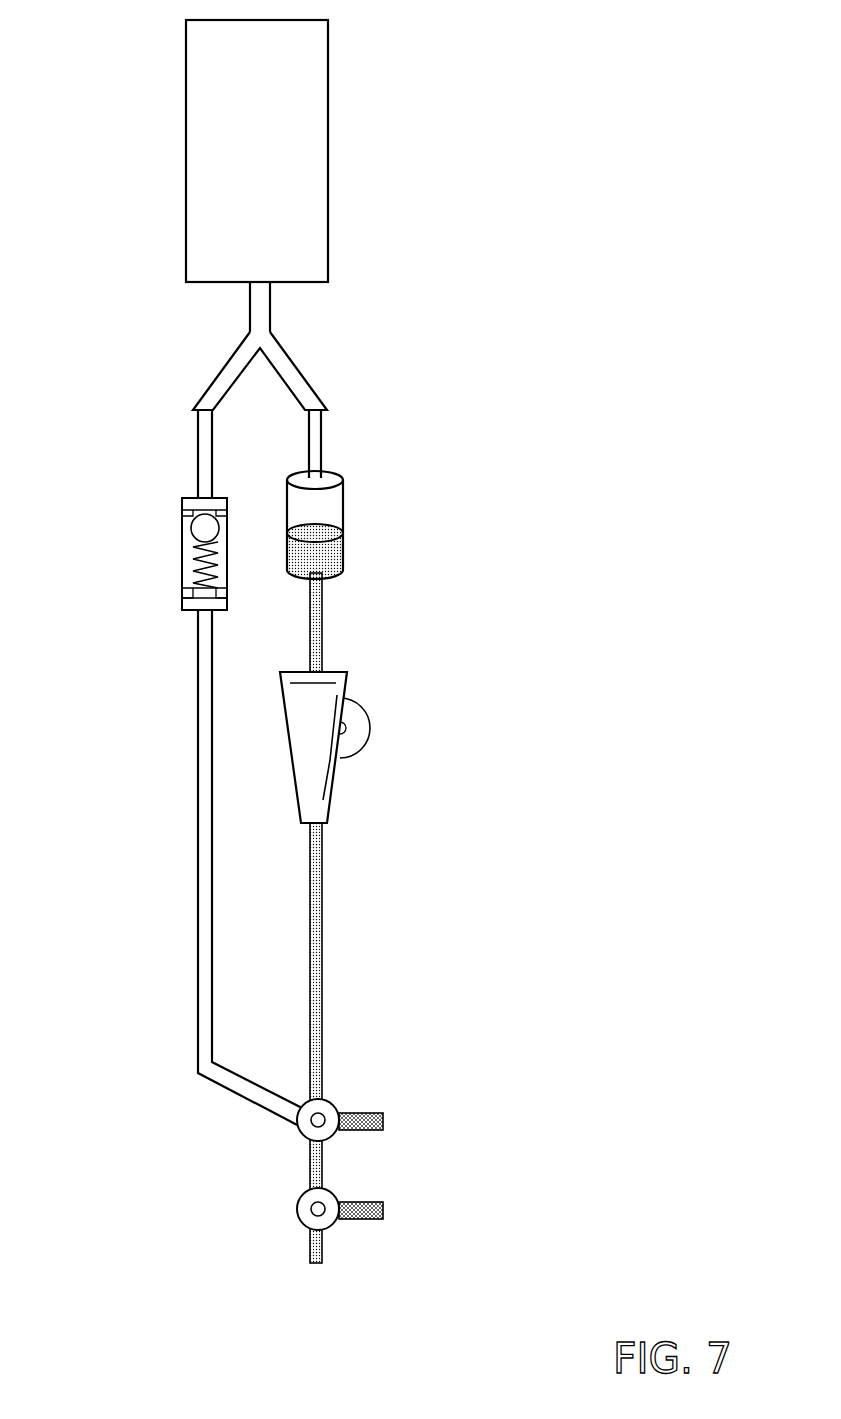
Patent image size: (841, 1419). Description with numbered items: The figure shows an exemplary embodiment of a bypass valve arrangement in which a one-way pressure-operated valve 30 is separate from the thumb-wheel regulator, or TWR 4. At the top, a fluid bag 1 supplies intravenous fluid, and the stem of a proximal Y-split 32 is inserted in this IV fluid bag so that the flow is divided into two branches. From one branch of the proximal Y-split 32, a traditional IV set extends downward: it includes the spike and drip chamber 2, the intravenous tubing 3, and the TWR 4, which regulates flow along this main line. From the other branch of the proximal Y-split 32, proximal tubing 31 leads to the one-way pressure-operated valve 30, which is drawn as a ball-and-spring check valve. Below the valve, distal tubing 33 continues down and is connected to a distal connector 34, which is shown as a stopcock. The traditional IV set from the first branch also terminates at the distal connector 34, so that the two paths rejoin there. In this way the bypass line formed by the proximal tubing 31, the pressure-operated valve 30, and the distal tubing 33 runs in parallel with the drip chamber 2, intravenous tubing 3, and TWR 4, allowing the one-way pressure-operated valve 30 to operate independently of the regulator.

The fluid bag 1 is at (376, 208).
The drip chamber 2 is at (390, 527).
The intravenous tubing 3 is at (362, 642).
The TWR 4 is at (407, 773).
The one-way pressure-operated valve 30 is at (145, 485).
The proximal tubing 31 is at (198, 442).
The proximal Y-split 32 is at (318, 367).
The distal tubing 33 is at (198, 802).
The distal connector 34 is at (409, 1118).